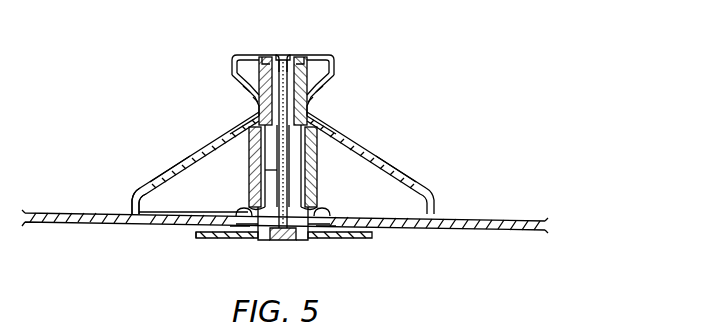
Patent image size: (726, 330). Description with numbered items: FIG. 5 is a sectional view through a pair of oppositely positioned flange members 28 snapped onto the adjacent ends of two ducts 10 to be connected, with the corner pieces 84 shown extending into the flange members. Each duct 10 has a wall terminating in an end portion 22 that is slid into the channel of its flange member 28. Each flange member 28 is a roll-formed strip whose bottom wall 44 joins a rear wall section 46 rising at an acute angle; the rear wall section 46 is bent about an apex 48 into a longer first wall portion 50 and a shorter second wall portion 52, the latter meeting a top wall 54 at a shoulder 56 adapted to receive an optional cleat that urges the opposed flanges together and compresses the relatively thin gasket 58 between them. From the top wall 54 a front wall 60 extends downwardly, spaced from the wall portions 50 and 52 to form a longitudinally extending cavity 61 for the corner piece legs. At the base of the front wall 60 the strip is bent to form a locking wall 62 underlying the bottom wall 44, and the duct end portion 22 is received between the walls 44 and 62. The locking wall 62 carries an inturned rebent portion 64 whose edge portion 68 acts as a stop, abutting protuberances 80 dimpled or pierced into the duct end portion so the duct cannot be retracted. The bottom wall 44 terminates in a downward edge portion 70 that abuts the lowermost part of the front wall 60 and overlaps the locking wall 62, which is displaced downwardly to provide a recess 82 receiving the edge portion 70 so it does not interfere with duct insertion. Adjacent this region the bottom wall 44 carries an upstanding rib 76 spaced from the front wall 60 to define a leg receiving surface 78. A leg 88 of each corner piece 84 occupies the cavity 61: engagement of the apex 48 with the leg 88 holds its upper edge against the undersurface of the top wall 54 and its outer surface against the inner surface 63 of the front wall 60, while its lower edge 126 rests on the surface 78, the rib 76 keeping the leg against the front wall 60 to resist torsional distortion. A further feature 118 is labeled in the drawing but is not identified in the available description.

The duct 10 is at (74, 205).
The end portion 22 is at (242, 232).
The upper flange member 28 is at (205, 52).
The bottom wall section 44 is at (166, 210).
The rear wall section 46 is at (176, 124).
The apex 48 is at (253, 100).
The first wall portion 50 is at (170, 170).
The second wall portion 52 is at (246, 89).
The top wall 54 is at (264, 56).
The shoulder 56 is at (232, 62).
The gasket 58 is at (283, 240).
The front wall 60 is at (232, 124).
The cavity 61 is at (140, 188).
The locking wall 62 is at (212, 240).
The inner surface 63 is at (250, 153).
The inturned rebent portion 64 is at (172, 240).
The edge portion 68 is at (206, 239).
The downward edge portion 70 is at (276, 242).
The rib 76 is at (238, 211).
The corner piece leg receiving surface 78 is at (255, 198).
The protuberances 80 is at (230, 240).
The recess 82 is at (252, 240).
The corner piece 84 is at (210, 142).
The leg 88 is at (250, 68).
The notch 118 is at (262, 62).
The inner edge 126 is at (262, 178).